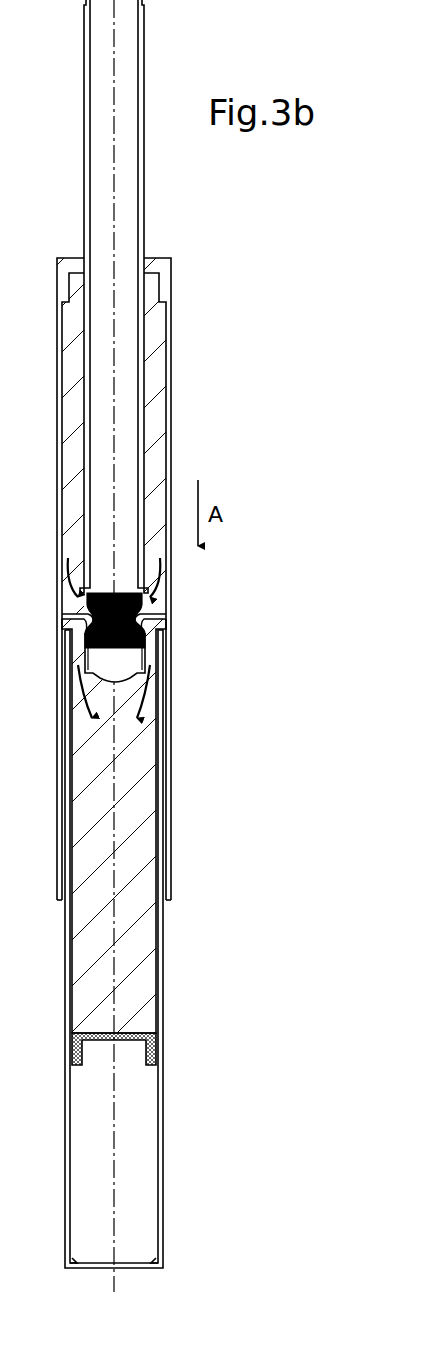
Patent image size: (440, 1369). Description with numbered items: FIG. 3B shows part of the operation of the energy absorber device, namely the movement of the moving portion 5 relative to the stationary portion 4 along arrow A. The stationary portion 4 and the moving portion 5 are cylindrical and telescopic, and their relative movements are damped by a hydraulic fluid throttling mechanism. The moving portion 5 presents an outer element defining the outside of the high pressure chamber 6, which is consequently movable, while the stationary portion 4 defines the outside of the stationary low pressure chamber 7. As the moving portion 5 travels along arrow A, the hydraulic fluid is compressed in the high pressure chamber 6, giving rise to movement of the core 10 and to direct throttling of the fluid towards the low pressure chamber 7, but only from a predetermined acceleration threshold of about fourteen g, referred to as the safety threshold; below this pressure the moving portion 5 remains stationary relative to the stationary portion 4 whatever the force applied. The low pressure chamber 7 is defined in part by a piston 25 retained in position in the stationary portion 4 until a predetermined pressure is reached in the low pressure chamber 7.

The stationary portion 4 is at (165, 1197).
The moving portion 5 is at (171, 365).
The high pressure chamber 6 is at (160, 410).
The low pressure chamber 7 is at (148, 932).
The core 10 is at (100, 590).
The piston 25 is at (133, 1040).